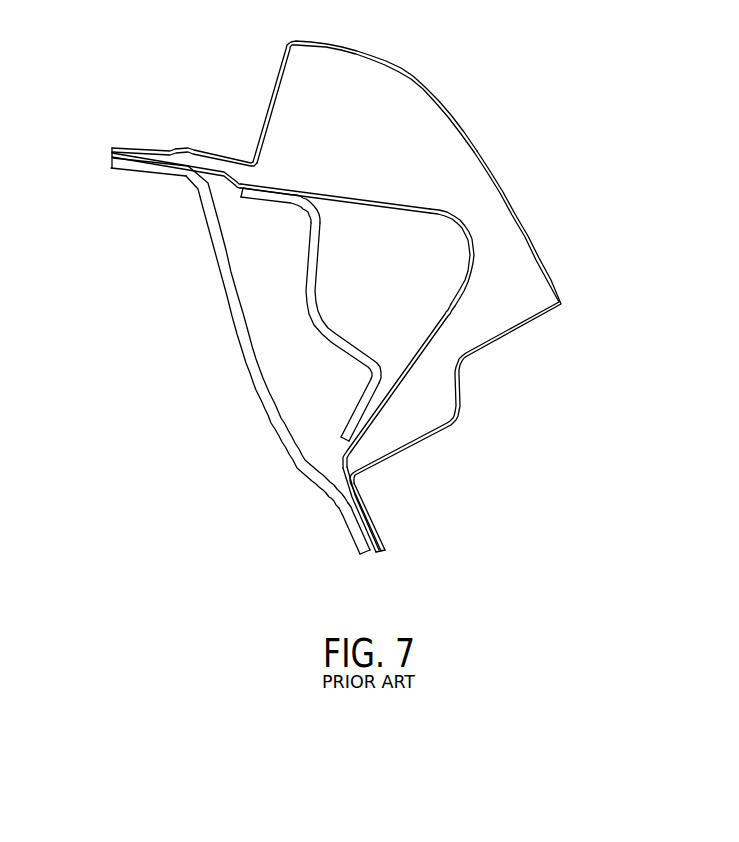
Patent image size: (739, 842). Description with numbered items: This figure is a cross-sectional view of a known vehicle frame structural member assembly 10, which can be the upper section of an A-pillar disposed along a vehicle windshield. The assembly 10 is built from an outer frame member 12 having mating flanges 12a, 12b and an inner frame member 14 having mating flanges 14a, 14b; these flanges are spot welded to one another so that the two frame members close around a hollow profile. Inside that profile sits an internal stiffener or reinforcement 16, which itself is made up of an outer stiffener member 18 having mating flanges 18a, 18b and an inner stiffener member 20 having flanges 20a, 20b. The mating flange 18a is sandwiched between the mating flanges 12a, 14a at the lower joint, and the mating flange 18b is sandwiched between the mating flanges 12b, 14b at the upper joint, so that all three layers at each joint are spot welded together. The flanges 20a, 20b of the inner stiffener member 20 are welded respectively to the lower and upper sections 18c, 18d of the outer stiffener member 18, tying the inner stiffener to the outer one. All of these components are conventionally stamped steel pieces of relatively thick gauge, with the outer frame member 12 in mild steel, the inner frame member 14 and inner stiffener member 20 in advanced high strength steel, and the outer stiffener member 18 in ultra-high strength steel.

The vehicle frame structural member assembly 10 is at (513, 102).
The outer frame member 12 is at (554, 277).
The mating flange 12a is at (369, 524).
The mating flange 12b is at (116, 150).
The inner frame member 14 is at (239, 334).
The mating flange 14a is at (356, 537).
The mating flange 14b is at (125, 168).
The internal stiffener or reinforcement 16 is at (336, 170).
The outer stiffener member 18 is at (473, 228).
The mating flange 18a is at (373, 556).
The mating flange 18b is at (110, 157).
The lower section 18c is at (419, 360).
The upper section 18d is at (371, 199).
The inner stiffener member 20 is at (319, 338).
The flange 20a is at (363, 414).
The flange 20b is at (269, 198).